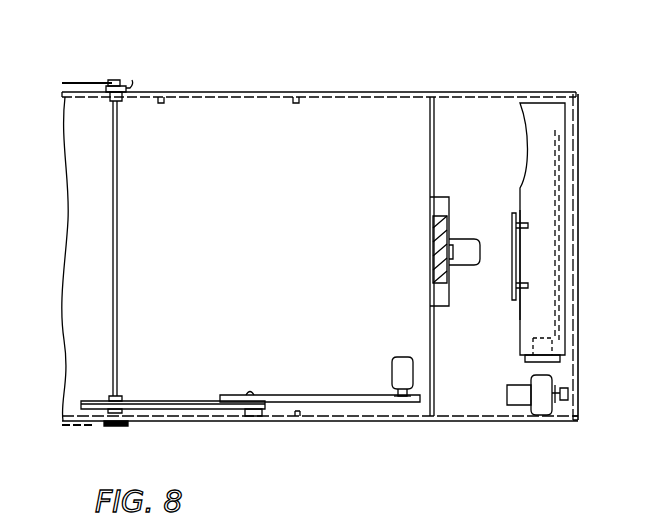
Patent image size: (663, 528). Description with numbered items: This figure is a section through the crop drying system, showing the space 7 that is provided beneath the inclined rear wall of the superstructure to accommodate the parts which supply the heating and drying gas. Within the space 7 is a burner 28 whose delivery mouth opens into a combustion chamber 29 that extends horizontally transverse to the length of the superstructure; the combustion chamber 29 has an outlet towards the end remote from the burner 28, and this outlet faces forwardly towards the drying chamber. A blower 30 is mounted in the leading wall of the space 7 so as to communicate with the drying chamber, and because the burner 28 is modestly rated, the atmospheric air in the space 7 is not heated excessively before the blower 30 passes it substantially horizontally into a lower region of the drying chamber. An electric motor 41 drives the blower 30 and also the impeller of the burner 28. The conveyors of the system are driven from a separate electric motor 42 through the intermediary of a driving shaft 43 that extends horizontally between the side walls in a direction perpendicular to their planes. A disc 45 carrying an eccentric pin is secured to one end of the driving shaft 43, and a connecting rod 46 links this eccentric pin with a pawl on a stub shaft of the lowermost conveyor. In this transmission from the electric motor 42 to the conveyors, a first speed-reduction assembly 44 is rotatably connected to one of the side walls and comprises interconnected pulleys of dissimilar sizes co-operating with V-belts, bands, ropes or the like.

The space 7 is at (432, 128).
The burner 28 is at (533, 372).
The combustion chamber 29 is at (535, 190).
The blower 30 is at (432, 243).
The electric motor 41 is at (480, 228).
The electric motor 42 is at (401, 357).
The driving shaft 43 is at (118, 253).
The first speed-reduction assembly 44 is at (230, 395).
The disc 45 is at (130, 80).
The connecting rod 46 is at (90, 68).